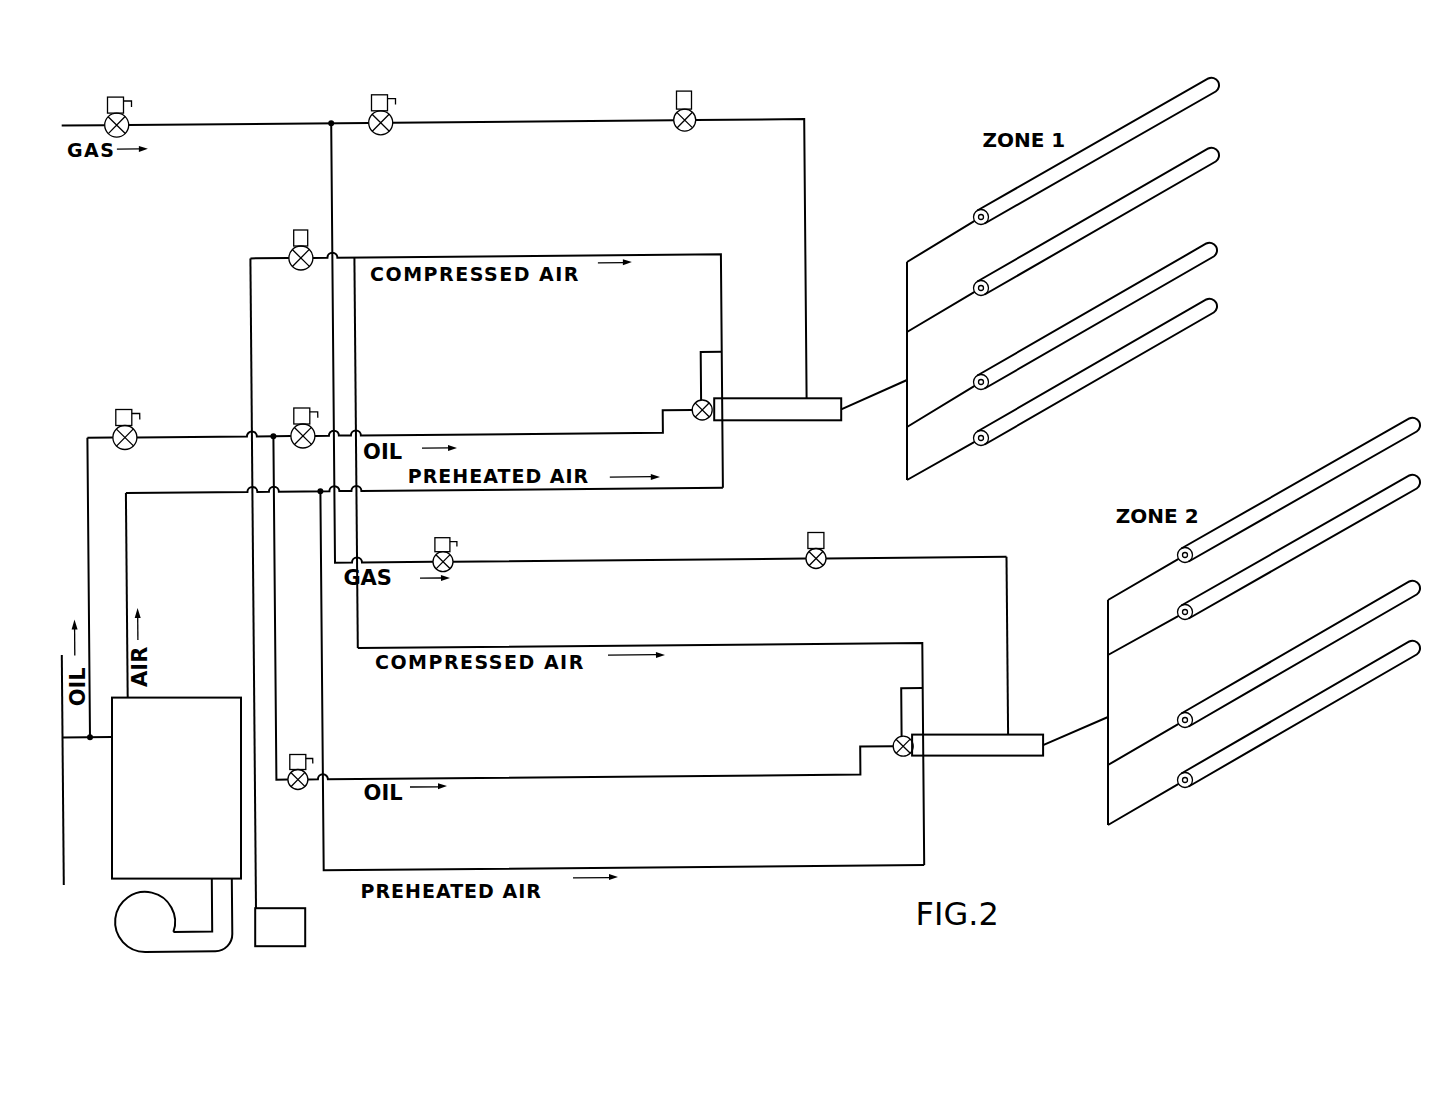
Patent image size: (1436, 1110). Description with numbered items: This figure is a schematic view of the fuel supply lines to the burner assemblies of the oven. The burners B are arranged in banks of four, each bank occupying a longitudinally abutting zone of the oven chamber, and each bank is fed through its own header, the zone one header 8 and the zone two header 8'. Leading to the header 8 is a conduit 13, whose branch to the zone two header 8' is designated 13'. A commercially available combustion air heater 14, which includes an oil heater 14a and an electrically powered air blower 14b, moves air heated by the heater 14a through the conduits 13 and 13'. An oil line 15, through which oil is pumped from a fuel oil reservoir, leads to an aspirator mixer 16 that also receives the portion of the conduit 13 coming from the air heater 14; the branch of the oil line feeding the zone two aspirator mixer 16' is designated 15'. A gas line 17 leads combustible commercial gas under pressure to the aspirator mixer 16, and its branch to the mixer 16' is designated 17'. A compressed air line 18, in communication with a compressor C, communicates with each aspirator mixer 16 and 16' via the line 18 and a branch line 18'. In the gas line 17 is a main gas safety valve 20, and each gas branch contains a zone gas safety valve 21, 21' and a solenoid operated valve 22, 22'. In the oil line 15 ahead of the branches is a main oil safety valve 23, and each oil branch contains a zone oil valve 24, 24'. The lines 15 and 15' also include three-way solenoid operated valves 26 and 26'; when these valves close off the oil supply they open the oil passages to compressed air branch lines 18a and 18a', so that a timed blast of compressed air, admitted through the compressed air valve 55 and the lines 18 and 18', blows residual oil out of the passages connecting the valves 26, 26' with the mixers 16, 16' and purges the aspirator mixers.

The header 8 is at (941, 350).
The zone 2 header 8' is at (1143, 692).
The burner B is at (1118, 135).
The conduit 13 is at (516, 539).
The conduit branch 13' is at (714, 695).
The combustion air heater 14 is at (152, 825).
The oil heater 14a is at (151, 825).
The air blower 14b is at (130, 912).
The oil line 15 is at (384, 575).
The oil branch line 15' is at (583, 617).
The aspirator mixer 16 is at (777, 390).
The aspirator mixer 16' is at (687, 439).
The gas line 17 is at (460, 258).
The gas branch line 17' is at (1034, 646).
The compressed air line 18 is at (486, 563).
The compressed air branch line 18' is at (640, 742).
The compressed air branch line 18a is at (680, 362).
The compressed air branch line 18a' is at (865, 703).
The main gas safety valve 20 is at (105, 118).
The zone gas safety valve 21 is at (418, 112).
The zone gas safety valve 21' is at (423, 539).
The solenoid operated valve 22 is at (654, 109).
The solenoid operated valve 22' is at (790, 545).
The main oil safety valve 23 is at (138, 430).
The zone oil valve 24 is at (287, 412).
The zone oil valve 24' is at (295, 750).
The three-way solenoid operated valve 26 is at (675, 398).
The three-way solenoid operated valve 26' is at (867, 733).
The compressed air valve 55 is at (297, 243).
The compressor C is at (293, 930).